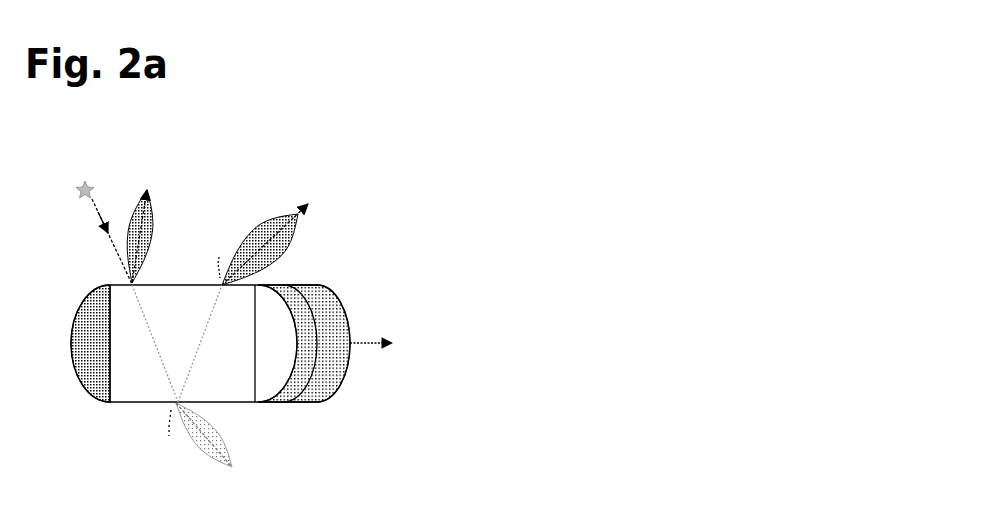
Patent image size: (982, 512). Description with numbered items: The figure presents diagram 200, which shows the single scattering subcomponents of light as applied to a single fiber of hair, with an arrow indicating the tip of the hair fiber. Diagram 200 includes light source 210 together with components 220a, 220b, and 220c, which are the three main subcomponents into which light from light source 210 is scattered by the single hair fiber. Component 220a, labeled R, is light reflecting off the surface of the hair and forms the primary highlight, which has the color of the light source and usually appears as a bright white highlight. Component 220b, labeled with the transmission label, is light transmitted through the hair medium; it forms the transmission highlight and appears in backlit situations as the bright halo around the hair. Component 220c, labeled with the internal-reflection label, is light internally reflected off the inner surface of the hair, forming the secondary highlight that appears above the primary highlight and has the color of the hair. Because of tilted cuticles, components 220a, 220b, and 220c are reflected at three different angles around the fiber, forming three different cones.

The diagram 200 is at (782, 106).
The light source 210 is at (86, 178).
The component R 220a is at (182, 188).
The component TT 220b is at (268, 465).
The component TRT 220c is at (372, 208).